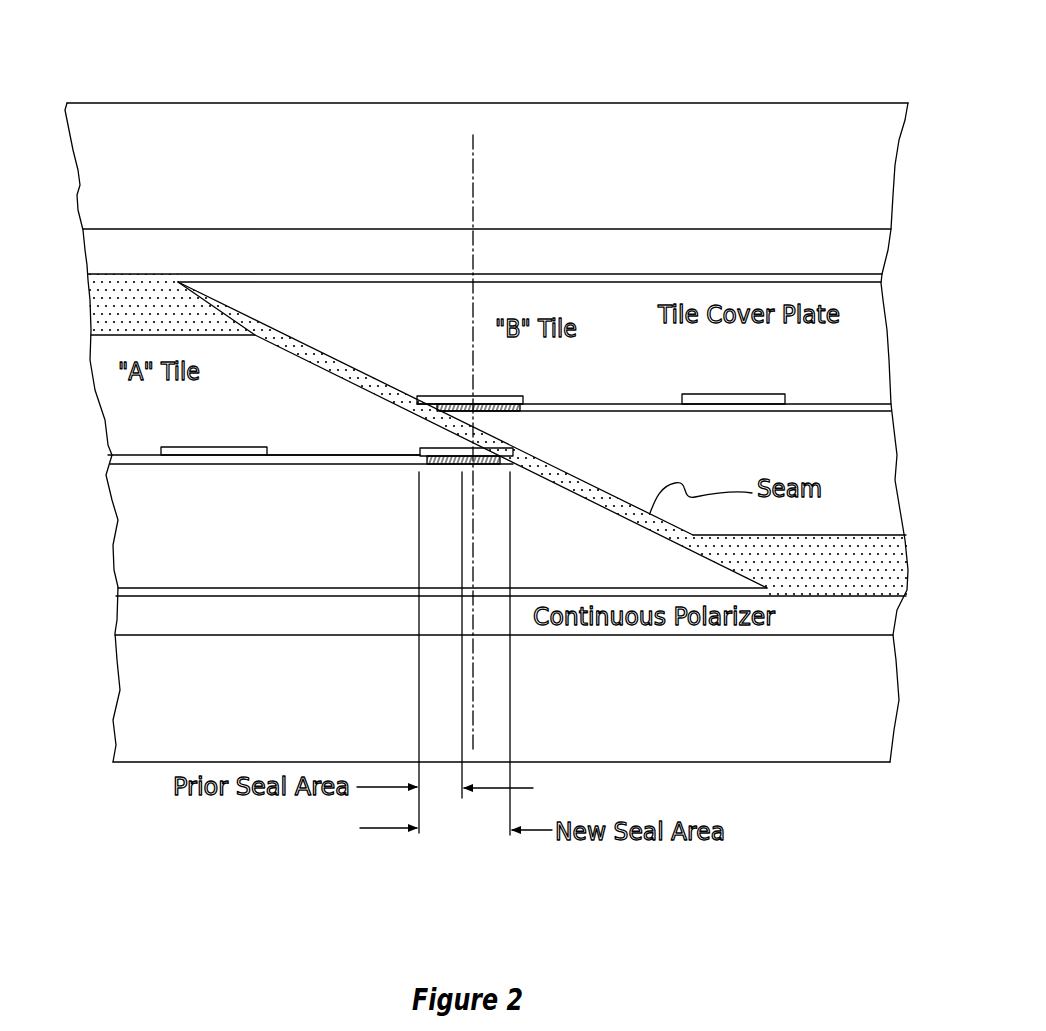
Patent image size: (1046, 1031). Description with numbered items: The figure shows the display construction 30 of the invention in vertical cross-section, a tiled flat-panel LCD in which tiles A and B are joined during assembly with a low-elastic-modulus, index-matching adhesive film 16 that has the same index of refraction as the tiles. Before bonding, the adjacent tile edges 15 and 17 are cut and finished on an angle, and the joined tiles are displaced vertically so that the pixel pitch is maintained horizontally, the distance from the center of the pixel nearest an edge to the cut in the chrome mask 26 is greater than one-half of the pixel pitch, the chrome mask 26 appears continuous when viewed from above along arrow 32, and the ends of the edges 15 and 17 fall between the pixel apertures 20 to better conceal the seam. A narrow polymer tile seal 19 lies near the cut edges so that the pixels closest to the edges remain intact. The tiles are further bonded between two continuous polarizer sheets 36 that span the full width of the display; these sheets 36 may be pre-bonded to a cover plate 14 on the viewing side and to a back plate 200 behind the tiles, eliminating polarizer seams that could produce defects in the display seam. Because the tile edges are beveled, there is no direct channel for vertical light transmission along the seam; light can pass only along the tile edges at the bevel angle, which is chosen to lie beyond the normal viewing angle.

The cover plate 14 is at (825, 175).
The tile edge 15 is at (322, 352).
The adhesive film 16 is at (137, 287).
The tile edge 17 is at (342, 378).
The polymer tile seal 19 is at (500, 410).
The pixel aperture 20 is at (418, 465).
The chrome mask 26 is at (687, 393).
The display construction 30 is at (665, 85).
The arrow 32 is at (457, 100).
The continuous polarizer sheets 36 is at (485, 255).
The back plate 200 is at (503, 698).